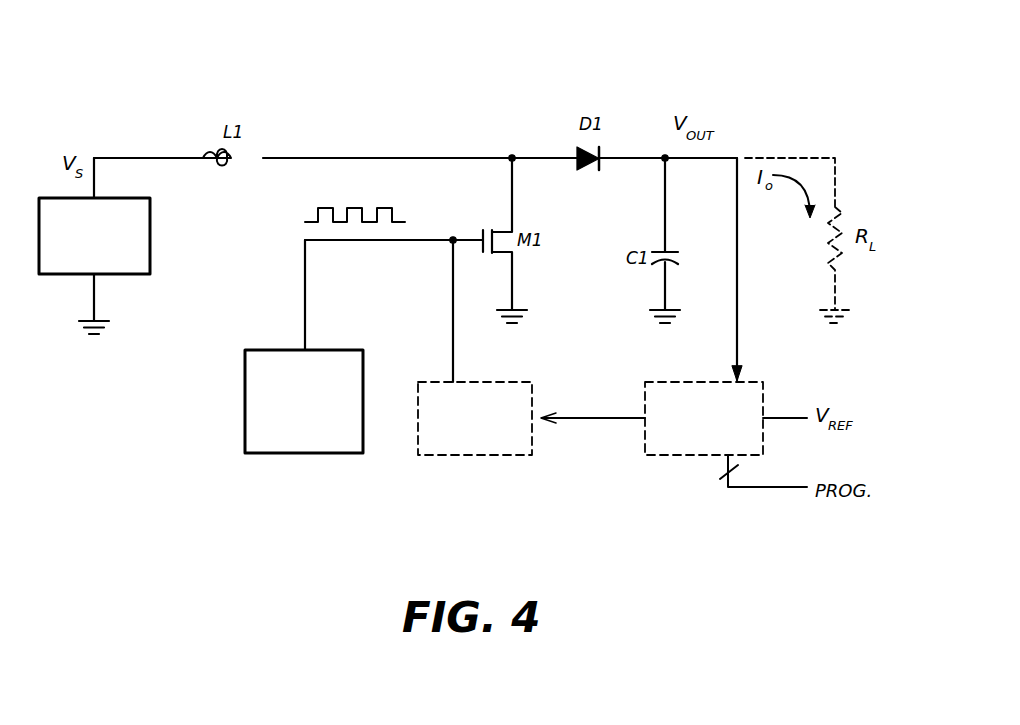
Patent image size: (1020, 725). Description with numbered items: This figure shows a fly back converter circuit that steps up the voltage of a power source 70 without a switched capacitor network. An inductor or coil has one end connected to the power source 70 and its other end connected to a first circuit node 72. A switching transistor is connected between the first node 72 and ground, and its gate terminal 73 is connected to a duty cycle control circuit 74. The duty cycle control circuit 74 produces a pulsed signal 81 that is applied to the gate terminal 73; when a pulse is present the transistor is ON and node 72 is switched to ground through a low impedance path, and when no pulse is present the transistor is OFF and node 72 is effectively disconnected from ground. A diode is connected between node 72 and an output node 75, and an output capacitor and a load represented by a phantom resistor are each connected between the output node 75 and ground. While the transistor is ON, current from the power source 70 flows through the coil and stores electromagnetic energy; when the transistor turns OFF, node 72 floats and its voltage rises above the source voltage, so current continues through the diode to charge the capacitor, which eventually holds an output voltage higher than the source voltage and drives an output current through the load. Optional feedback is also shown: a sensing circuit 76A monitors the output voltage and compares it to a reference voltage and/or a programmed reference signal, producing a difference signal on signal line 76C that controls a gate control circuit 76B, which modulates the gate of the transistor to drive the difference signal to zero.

The power source 70 is at (150, 236).
The first circuit node 72 is at (512, 158).
The gate terminal 73 is at (420, 240).
The duty cycle control circuit 74 is at (297, 453).
The output node 75 is at (665, 158).
The sensing circuit 76A is at (677, 455).
The gate control circuit 76B is at (477, 455).
The signal line 76C is at (577, 418).
The pulsed signal 81 is at (383, 196).